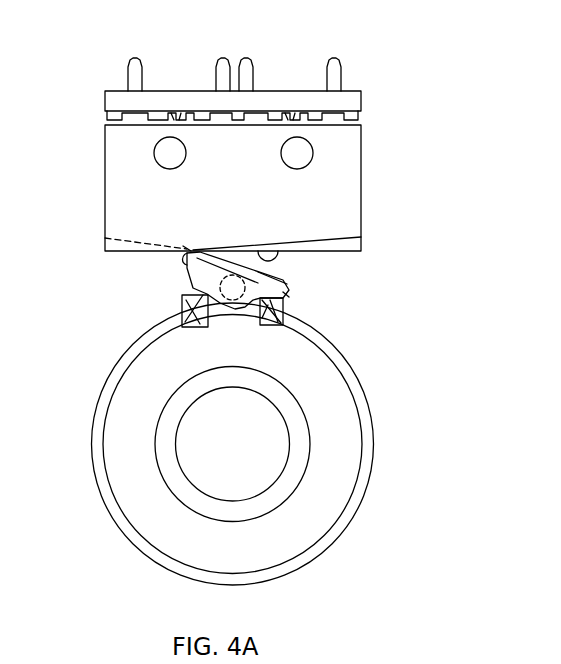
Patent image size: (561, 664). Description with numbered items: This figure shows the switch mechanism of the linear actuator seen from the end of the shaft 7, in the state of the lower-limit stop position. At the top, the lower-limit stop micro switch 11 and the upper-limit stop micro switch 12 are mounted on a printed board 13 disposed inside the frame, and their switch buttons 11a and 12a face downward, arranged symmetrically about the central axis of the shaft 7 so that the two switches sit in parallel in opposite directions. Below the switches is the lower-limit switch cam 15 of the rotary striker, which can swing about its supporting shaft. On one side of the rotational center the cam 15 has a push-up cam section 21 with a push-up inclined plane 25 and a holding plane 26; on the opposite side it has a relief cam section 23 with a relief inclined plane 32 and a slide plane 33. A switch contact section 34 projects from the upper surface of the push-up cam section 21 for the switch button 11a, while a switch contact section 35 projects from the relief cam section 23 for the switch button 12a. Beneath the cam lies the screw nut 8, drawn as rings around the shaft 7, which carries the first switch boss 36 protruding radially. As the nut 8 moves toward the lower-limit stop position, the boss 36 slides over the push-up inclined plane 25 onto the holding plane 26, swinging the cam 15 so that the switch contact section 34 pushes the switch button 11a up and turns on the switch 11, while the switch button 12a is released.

The shaft 7 is at (270, 463).
The screw nut 8 is at (347, 428).
The lower-limit stop micro switch 11 is at (348, 182).
The switch button 11a is at (182, 265).
The upper-limit stop micro switch 12 is at (363, 248).
The switch button 12a is at (293, 278).
The printed board 13 is at (292, 100).
The lower-limit switch cam 15 is at (232, 265).
The push-up cam section 21 is at (193, 300).
The relief cam section 23 is at (283, 315).
The push-up inclined plane 25 is at (197, 300).
The holding plane 26 is at (203, 302).
The relief inclined plane 32 is at (258, 325).
The slide plane 33 is at (275, 313).
The switch contact section 34 is at (187, 248).
The switch contact section 35 is at (290, 295).
The first switch boss 36 is at (190, 302).